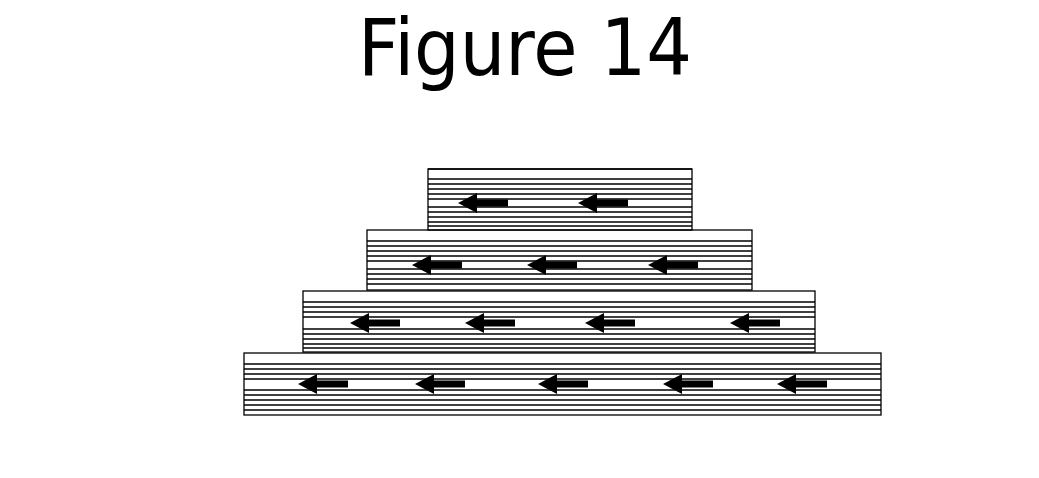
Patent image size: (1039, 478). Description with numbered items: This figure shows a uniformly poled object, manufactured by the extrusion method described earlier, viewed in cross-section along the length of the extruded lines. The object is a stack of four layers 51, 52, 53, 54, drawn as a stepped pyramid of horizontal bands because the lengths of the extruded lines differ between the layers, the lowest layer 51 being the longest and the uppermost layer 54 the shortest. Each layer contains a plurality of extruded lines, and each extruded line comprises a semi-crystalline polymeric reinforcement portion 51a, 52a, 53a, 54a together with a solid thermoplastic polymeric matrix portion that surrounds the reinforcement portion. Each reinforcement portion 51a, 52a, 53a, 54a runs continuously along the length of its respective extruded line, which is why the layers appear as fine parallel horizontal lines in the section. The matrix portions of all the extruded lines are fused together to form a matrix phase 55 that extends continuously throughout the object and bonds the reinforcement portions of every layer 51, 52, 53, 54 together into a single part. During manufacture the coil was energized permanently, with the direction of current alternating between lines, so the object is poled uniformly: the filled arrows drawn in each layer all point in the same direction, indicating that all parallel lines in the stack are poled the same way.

The layer 51 is at (187, 383).
The reinforcement portion 51a is at (277, 380).
The layer 52 is at (853, 326).
The reinforcement portion 52a is at (786, 306).
The layer 53 is at (323, 265).
The reinforcement portion 53a is at (402, 265).
The layer 54 is at (712, 203).
The reinforcement portion 54a is at (667, 190).
The matrix phase 55 is at (508, 169).